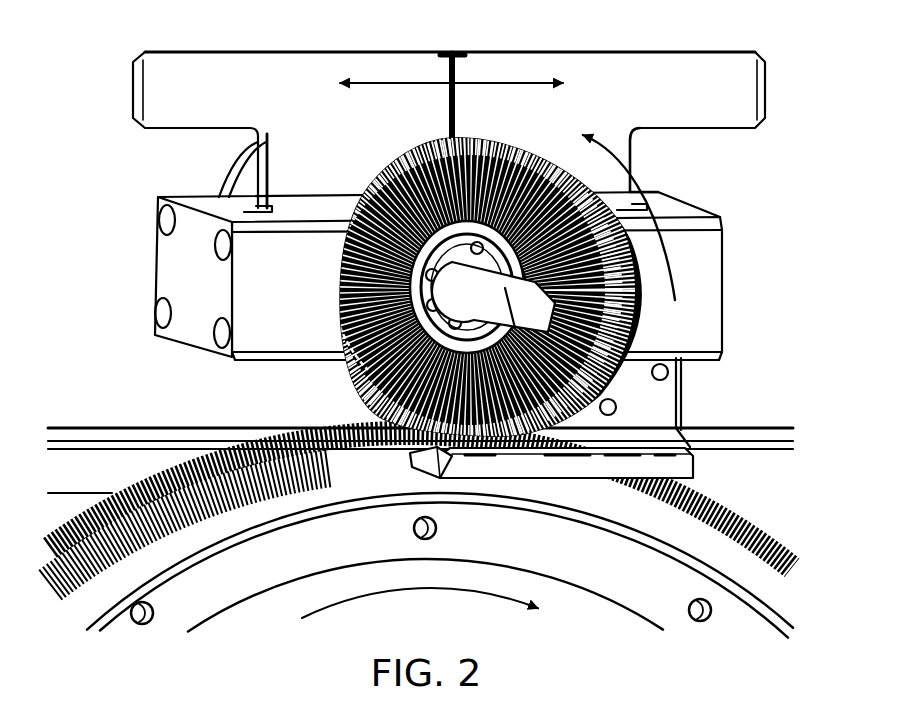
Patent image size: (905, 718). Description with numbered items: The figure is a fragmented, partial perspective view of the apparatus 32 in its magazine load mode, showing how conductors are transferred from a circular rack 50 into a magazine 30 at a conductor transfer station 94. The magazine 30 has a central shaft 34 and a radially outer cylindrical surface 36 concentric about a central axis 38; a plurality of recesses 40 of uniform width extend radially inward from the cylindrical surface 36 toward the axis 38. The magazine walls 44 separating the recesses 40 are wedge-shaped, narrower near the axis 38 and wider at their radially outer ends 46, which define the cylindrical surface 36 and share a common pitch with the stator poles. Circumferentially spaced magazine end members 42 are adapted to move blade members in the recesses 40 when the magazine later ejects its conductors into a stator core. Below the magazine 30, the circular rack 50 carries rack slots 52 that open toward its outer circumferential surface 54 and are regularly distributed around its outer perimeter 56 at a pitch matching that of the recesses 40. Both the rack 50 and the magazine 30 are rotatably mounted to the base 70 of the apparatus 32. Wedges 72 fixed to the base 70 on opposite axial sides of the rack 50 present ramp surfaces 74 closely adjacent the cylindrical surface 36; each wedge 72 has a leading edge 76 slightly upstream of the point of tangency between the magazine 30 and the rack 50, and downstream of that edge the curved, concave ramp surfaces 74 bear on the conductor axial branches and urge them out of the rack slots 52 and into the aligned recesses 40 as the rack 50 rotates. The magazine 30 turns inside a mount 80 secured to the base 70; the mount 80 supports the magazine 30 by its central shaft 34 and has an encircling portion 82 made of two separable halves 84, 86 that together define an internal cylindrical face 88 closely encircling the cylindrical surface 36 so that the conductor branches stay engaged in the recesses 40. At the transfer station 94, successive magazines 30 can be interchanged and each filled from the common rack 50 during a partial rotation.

The magazine 30 is at (527, 143).
The apparatus 32 is at (88, 78).
The central shaft 34 is at (345, 300).
The radially outer cylindrical surface 36 is at (370, 160).
The central axis 38 is at (424, 276).
The recesses 40 is at (353, 182).
The magazine end members 42 is at (463, 264).
The magazine walls 44 is at (467, 138).
The radially outer ends 46 is at (420, 143).
The circular rack 50 is at (627, 605).
The rack slots 52 is at (707, 482).
The outer circumferential surface 54 is at (422, 482).
The outer perimeter 56 is at (195, 455).
The base 70 is at (745, 425).
The wedges 72 is at (660, 393).
The ramp surfaces 74 is at (403, 452).
The leading edge 76 is at (412, 450).
The mount 80 is at (138, 325).
The encircling portion 82 is at (427, 62).
The separable half 84 is at (283, 77).
The separable half 86 is at (650, 65).
The internal cylindrical face 88 is at (360, 180).
The conductor transfer station 94 is at (758, 205).